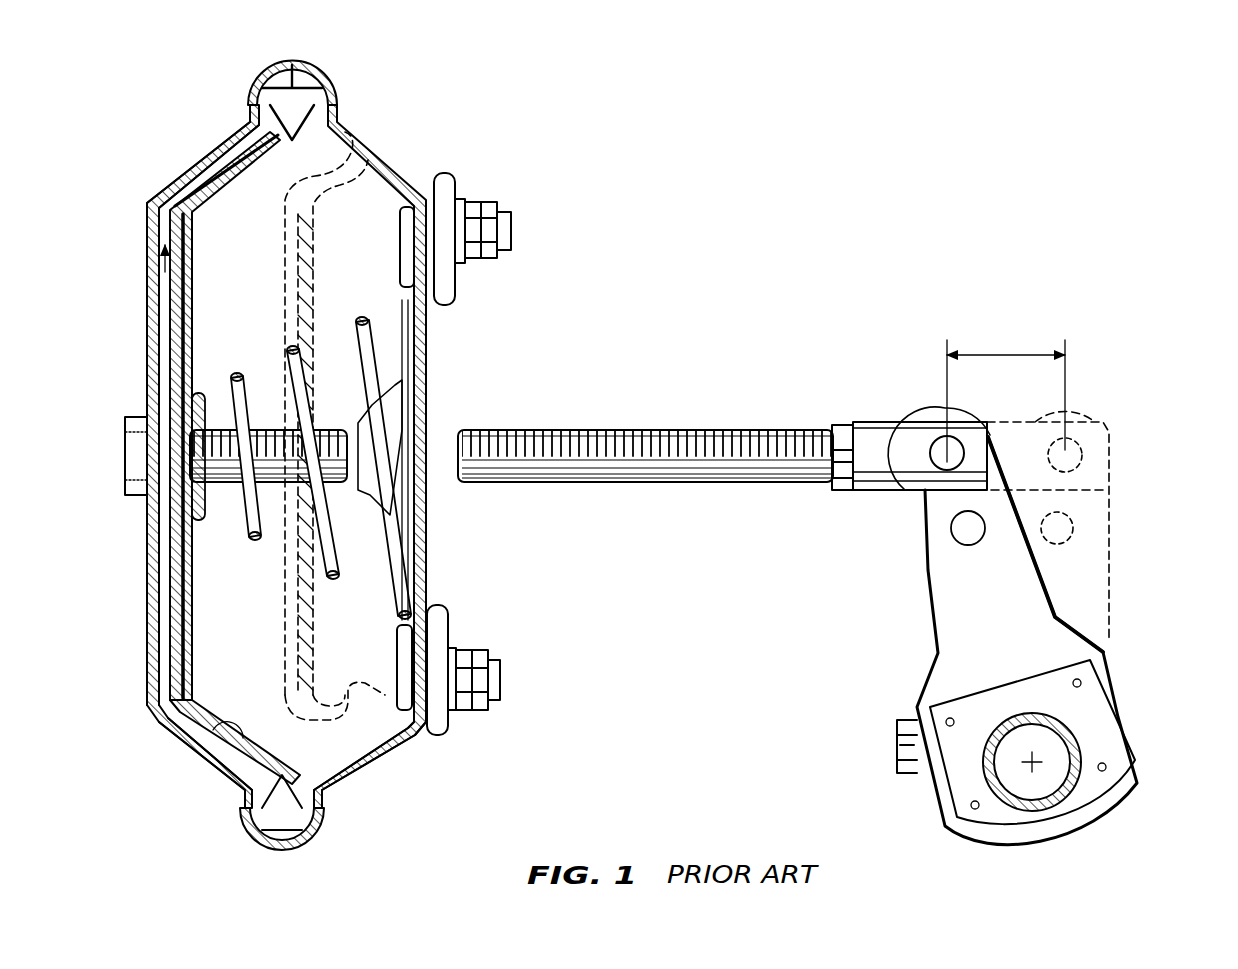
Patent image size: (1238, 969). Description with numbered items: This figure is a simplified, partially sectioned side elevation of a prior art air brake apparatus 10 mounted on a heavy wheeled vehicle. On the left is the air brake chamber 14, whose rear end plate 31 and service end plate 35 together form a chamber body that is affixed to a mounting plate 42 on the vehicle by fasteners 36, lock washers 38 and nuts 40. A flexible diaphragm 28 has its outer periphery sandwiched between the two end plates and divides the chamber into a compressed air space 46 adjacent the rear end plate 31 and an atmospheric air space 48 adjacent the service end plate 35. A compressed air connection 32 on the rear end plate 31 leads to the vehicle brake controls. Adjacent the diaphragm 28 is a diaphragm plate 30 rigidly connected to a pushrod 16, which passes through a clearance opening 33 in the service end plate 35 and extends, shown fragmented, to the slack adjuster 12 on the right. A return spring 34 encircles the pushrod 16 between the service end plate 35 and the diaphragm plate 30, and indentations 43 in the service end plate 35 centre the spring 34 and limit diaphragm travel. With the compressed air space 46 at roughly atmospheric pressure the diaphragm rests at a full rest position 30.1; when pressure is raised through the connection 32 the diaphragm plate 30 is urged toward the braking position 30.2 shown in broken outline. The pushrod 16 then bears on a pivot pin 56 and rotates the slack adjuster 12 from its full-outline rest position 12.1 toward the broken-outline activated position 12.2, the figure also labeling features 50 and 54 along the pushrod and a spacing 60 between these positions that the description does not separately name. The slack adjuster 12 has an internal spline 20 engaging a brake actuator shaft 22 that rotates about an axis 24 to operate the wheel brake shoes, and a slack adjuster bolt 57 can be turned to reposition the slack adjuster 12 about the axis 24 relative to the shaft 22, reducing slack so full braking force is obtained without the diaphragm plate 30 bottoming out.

The air brake apparatus 10 is at (860, 220).
The slack adjuster 12 is at (957, 598).
The rest position 12.1 is at (945, 383).
The activated position 12.2 is at (1065, 378).
The air brake chamber 14 is at (392, 112).
The pushrod 16 is at (637, 415).
The internal spline 20 is at (1083, 750).
The brake actuator shaft 22 is at (1042, 740).
The axis 24 is at (1027, 762).
The flexible diaphragm 28 is at (228, 722).
The diaphragm plate 30 is at (200, 215).
The full rest position 30.1 is at (192, 628).
The braking position 30.2 is at (390, 740).
The rear end plate 31 is at (243, 140).
The compressed air connection 32 is at (130, 440).
The clearance opening 33 is at (427, 475).
The return spring 34 is at (372, 345).
The service end plate 35 is at (425, 366).
The fasteners 36 is at (512, 226).
The lock washers 38 is at (458, 205).
The nuts 40 is at (482, 205).
The mounting plate 42 is at (445, 178).
The indentations 43 is at (395, 392).
The compressed air space 46 is at (155, 270).
The atmospheric air space 48 is at (380, 590).
The threaded rod 50 is at (700, 483).
The clevis 54 is at (880, 490).
The pivot pin 56 is at (942, 472).
The slack adjuster bolt 57 is at (897, 738).
The pivot spacing 60 is at (1005, 353).